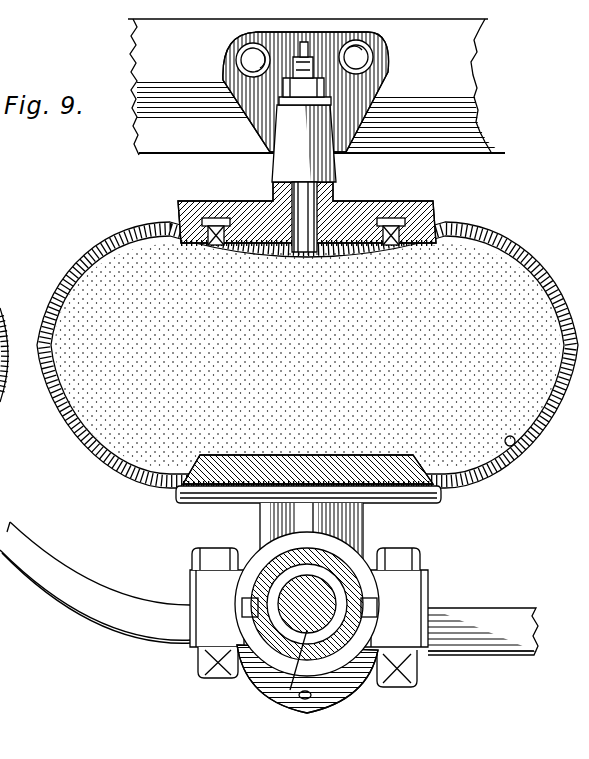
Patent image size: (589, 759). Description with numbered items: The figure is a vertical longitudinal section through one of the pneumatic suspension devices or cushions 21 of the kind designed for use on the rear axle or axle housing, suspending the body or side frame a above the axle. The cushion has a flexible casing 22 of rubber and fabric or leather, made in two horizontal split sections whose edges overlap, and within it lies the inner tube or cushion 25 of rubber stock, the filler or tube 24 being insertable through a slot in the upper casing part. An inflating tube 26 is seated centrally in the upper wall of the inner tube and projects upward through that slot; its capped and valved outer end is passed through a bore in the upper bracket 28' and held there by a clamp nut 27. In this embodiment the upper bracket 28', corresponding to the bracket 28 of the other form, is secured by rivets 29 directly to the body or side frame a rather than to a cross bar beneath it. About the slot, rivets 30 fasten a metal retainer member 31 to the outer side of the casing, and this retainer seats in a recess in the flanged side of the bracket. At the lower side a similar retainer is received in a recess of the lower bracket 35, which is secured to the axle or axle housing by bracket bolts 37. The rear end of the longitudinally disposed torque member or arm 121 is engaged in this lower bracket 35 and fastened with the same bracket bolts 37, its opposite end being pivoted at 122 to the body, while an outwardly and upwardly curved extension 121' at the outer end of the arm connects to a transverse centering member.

The body or side frame a is at (132, 32).
The pneumatic suspension device or cushion 21 is at (307, 355).
The casing 22 is at (84, 450).
The filler or tube 24 is at (560, 355).
The inner tube or cushion 25 is at (531, 441).
The inflating tube 26 is at (285, 83).
The clamp nut 27 is at (328, 98).
The bracket 28 is at (282, 178).
The upper bracket 28' is at (282, 178).
The rivets 29 is at (353, 55).
The rivets 30 is at (207, 223).
The retainer member 31 is at (424, 228).
The lower bracket 35 is at (272, 521).
The bracket bolts 37 is at (421, 554).
The torque member or arm 121 is at (96, 591).
The curved extension 121' is at (96, 591).
The pivot 122 is at (505, 651).